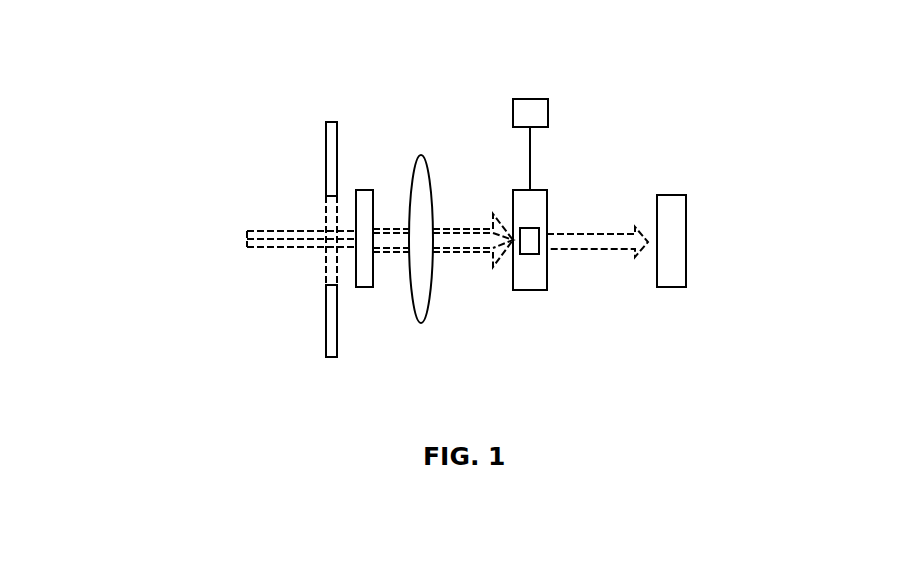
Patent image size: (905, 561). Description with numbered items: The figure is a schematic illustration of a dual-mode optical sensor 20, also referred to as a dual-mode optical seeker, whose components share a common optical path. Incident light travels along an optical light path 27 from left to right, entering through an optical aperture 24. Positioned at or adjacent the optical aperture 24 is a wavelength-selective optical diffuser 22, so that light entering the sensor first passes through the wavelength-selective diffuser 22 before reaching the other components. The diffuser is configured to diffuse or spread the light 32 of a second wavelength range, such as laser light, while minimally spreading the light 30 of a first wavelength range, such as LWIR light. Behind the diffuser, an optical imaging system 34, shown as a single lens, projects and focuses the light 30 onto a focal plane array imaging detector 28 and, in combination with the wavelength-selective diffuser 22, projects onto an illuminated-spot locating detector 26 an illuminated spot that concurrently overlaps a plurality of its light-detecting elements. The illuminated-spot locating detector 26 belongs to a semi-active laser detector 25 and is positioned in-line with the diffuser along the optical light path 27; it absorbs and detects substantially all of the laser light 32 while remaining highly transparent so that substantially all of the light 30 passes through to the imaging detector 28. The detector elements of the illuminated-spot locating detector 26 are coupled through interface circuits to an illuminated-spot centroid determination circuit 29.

The dual-mode optical sensor 20 is at (688, 100).
The wavelength-selective optical diffuser 22 is at (366, 290).
The optical aperture 24 is at (319, 276).
The semi-active laser (SAL) detector 25 is at (532, 292).
The illuminated-spot locating detector (ISLD) 26 is at (528, 226).
The optical light path 27 is at (140, 241).
The focal plane array (FPA) imaging detector 28 is at (672, 292).
The illuminated-spot centroid determination (ISCD) circuit 29 is at (530, 97).
The light of a first wavelength range 30 is at (598, 228).
The light of a second wavelength range 32 is at (456, 225).
The optical imaging system 34 is at (430, 298).